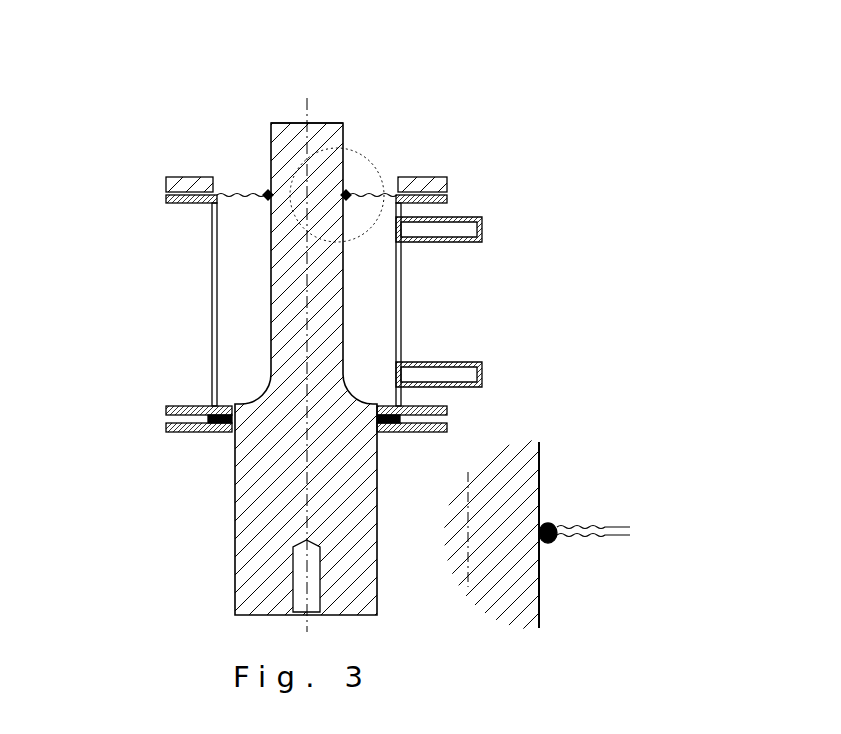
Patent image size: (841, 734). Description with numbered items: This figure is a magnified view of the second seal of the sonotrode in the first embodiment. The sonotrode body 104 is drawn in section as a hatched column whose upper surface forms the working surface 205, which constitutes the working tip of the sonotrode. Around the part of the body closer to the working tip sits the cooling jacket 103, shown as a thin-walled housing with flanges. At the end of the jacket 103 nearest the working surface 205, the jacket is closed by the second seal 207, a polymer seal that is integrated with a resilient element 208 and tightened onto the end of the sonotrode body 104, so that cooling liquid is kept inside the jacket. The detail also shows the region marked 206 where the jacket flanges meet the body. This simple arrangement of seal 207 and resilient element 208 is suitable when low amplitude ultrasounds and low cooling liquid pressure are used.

The cooling jacket 103 is at (398, 297).
The sonotrode body 104 is at (305, 483).
The working surface 205 is at (308, 125).
The weld joint 206 is at (397, 416).
The second seal 207 is at (552, 522).
The resilient element 208 is at (612, 539).